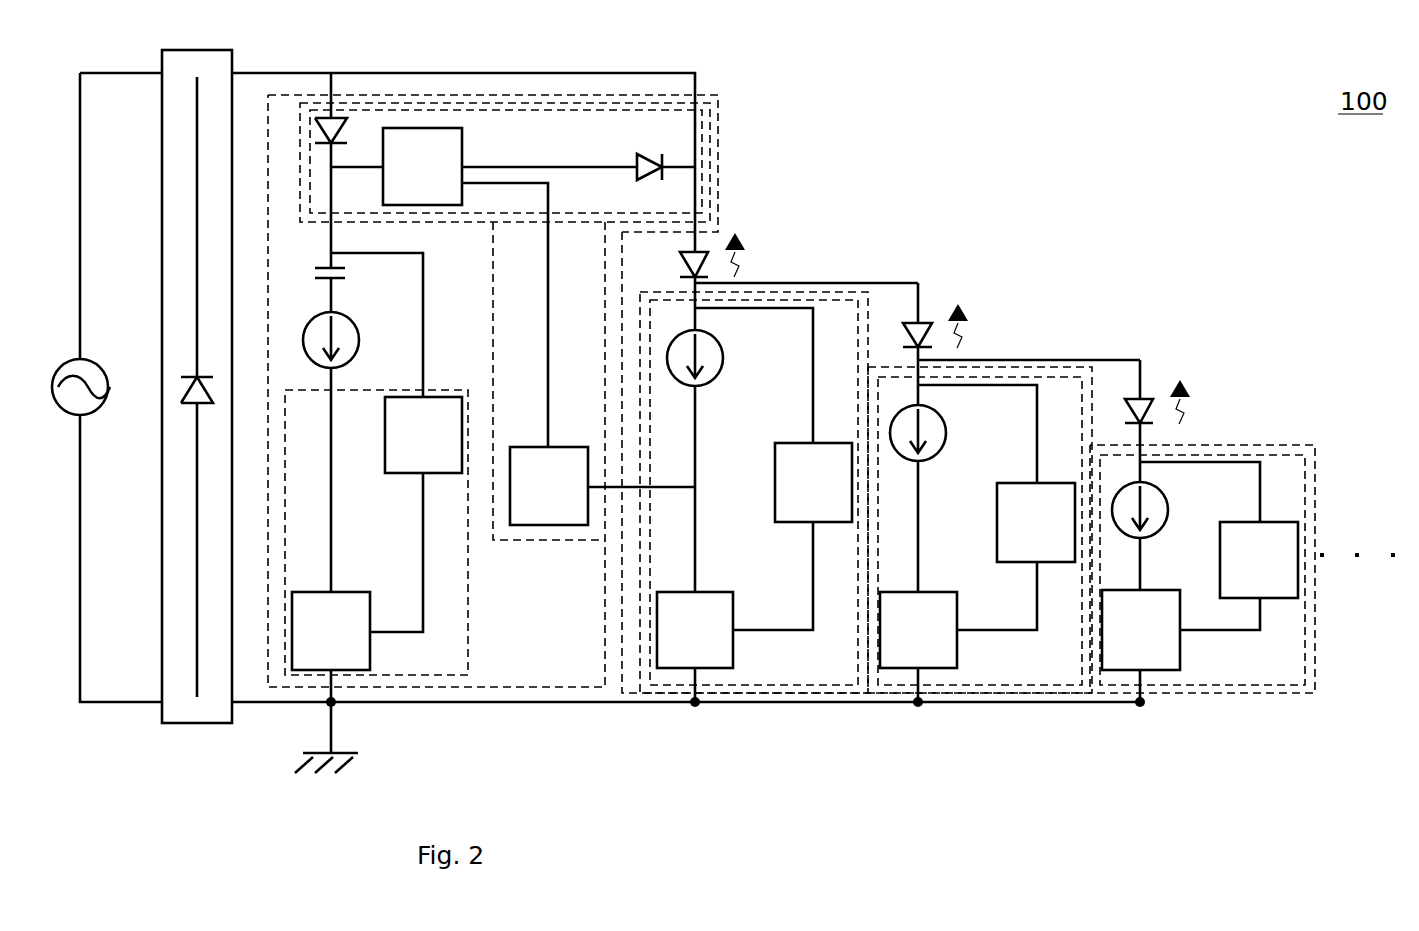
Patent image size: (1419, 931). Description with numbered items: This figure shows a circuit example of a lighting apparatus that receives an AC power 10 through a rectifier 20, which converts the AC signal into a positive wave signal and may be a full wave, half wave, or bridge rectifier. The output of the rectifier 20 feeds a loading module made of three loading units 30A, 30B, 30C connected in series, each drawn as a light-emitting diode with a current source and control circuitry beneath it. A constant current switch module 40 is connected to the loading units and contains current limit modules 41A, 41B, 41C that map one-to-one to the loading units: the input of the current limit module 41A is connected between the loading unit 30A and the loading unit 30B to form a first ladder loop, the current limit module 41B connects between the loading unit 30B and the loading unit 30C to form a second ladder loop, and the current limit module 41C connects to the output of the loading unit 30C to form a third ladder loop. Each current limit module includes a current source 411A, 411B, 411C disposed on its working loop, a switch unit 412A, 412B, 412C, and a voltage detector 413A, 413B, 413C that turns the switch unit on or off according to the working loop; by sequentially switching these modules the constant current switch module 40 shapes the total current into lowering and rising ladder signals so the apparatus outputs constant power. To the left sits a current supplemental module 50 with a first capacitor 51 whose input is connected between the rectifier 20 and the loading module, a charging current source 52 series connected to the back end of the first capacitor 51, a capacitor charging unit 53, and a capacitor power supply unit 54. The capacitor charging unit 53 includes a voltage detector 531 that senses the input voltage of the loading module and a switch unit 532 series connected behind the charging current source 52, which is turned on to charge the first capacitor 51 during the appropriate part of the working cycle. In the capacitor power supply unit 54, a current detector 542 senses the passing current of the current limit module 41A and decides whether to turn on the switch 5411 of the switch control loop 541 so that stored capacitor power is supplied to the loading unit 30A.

The AC power 10 is at (93, 410).
The rectifier 20 is at (193, 723).
The current supplemental module 50 is at (545, 687).
The capacitor power supply unit 54 is at (578, 540).
The switch control loop 541 is at (558, 108).
The switch 5411 is at (422, 128).
The current detector 542 is at (550, 528).
The first capacitor 51 is at (345, 278).
The charging current source 52 is at (355, 355).
The capacitor charging unit 53 is at (468, 625).
The voltage detector 531 is at (405, 473).
The switch unit 532 is at (345, 592).
The constant current switch module 40 is at (1265, 445).
The loading unit 30A is at (700, 270).
The loading unit 30B is at (923, 343).
The loading unit 30C is at (1145, 418).
The current limit module 41A is at (797, 693).
The current limit module 41B is at (1030, 693).
The current limit module 41C is at (1262, 693).
The current source 411A is at (721, 345).
The current source 411B is at (944, 425).
The current source 411C is at (1165, 500).
The switch unit 412A is at (733, 655).
The switch unit 412B is at (957, 655).
The switch unit 412C is at (1180, 655).
The voltage detector 413A is at (798, 443).
The voltage detector 413B is at (1020, 483).
The voltage detector 413C is at (1290, 522).